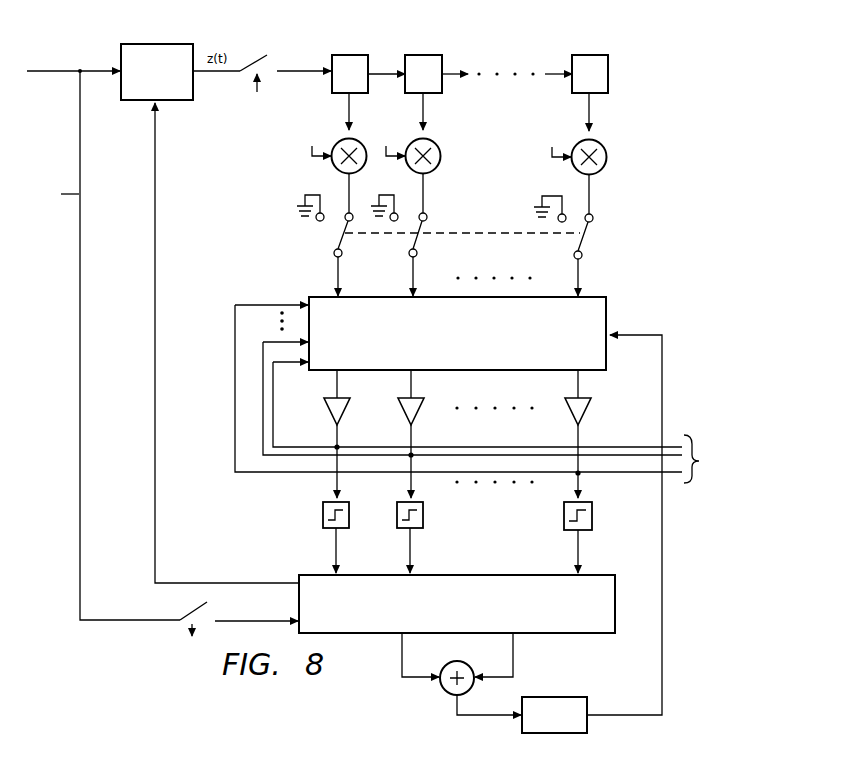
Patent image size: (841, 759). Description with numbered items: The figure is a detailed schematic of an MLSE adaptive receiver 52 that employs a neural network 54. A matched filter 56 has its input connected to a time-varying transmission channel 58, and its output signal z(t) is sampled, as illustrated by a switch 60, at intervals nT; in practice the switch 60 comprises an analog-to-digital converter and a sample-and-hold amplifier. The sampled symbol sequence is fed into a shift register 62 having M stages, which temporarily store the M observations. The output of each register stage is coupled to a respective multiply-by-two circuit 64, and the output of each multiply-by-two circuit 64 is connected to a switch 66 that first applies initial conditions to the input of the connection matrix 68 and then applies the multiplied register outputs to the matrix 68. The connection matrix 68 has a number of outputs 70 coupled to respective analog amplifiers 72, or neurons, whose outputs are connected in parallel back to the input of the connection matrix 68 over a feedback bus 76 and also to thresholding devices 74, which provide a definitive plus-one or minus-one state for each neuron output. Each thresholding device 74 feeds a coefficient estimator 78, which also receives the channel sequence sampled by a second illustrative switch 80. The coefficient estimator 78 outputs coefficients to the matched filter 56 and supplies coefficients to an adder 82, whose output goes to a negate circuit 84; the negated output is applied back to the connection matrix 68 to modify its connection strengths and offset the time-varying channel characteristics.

The MLSE adaptive receiver 52 is at (69, 186).
The neural network 54 is at (471, 221).
The matched filter 56 is at (147, 43).
The time-varying transmission channel 58 is at (60, 76).
The switch 60 is at (258, 56).
The shift register 62 is at (450, 34).
The multiply-by-two circuit 64 is at (337, 170).
The switch 66 is at (336, 240).
The connection matrix 68 is at (597, 308).
The outputs 70 is at (336, 387).
The analog amplifier 72 is at (331, 411).
The thresholding device 74 is at (323, 512).
The feedback bus 76 is at (700, 459).
The coefficient estimator 78 is at (535, 580).
The second switch 80 is at (197, 608).
The adder 82 is at (448, 690).
The negate circuit 84 is at (556, 697).